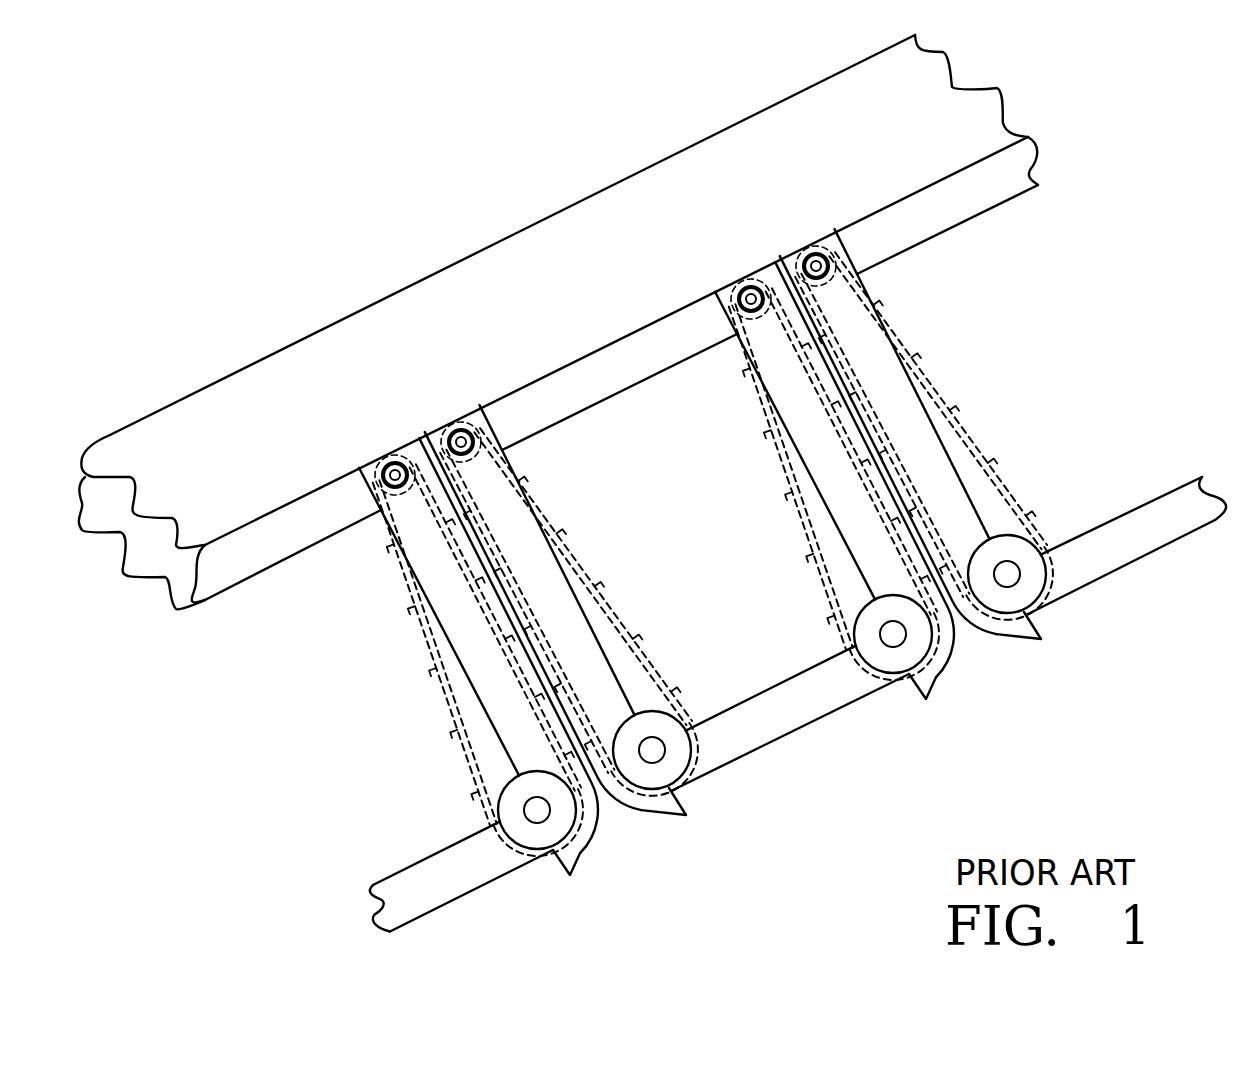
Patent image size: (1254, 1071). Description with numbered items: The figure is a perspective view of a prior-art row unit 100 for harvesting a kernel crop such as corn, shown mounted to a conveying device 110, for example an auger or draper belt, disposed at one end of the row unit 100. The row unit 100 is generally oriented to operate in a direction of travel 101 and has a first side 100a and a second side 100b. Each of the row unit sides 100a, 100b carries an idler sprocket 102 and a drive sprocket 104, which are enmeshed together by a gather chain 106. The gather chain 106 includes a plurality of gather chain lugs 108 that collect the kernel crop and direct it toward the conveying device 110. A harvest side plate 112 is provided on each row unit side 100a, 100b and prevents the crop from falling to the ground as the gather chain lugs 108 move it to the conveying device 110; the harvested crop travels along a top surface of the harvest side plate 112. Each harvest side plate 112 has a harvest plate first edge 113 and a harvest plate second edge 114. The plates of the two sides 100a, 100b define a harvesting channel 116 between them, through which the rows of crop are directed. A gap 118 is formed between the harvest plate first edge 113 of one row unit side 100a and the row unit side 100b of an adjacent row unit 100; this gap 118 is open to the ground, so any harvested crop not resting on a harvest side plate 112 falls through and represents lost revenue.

The row unit 100 is at (750, 580).
The first side 100a is at (711, 542).
The second side 100b is at (746, 519).
The direction of travel 101 is at (290, 888).
The idler sprocket 102 is at (881, 668).
The drive sprocket 104 is at (721, 273).
The gather chain 106 is at (828, 484).
The gather chain lugs 108 is at (795, 483).
The conveying device 110 is at (546, 311).
The harvest side plate 112 is at (568, 876).
The harvest plate first edge 113 is at (795, 446).
The harvest plate second edge 114 is at (888, 445).
The harvesting channel 116 is at (930, 474).
The gap 118 is at (750, 667).